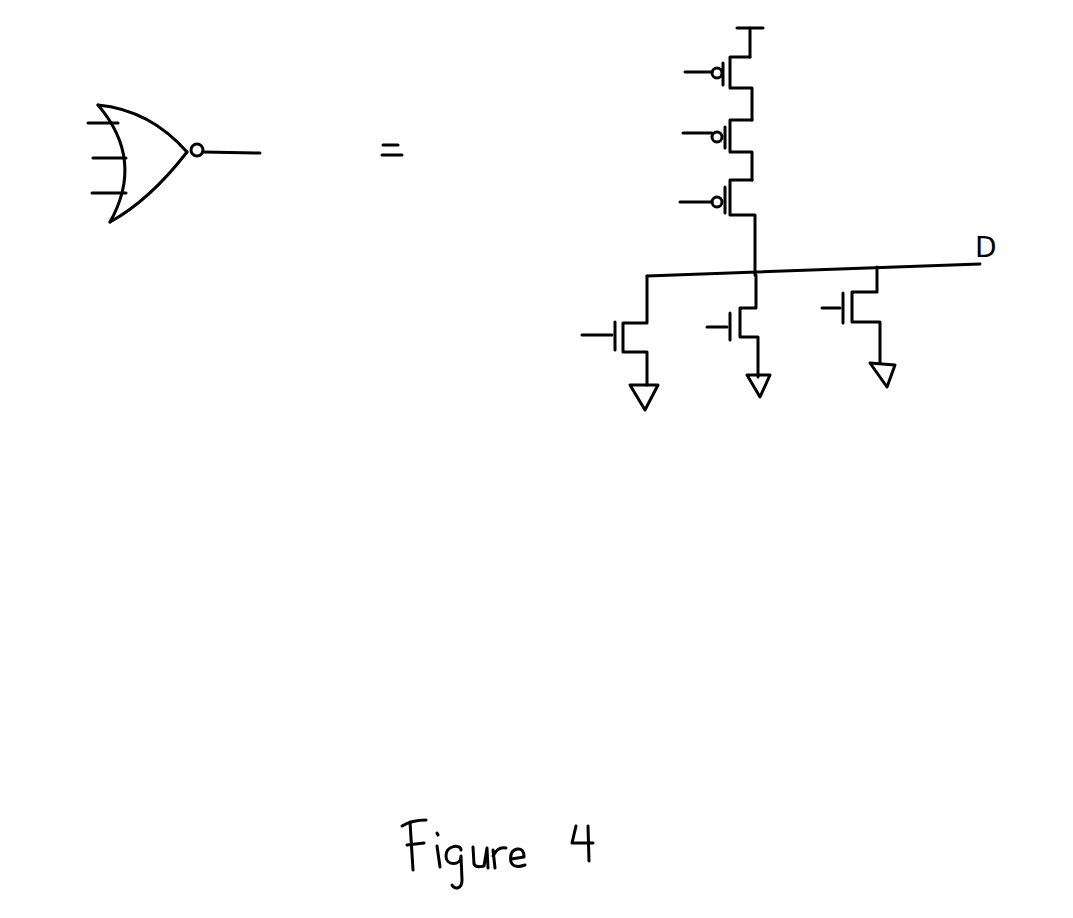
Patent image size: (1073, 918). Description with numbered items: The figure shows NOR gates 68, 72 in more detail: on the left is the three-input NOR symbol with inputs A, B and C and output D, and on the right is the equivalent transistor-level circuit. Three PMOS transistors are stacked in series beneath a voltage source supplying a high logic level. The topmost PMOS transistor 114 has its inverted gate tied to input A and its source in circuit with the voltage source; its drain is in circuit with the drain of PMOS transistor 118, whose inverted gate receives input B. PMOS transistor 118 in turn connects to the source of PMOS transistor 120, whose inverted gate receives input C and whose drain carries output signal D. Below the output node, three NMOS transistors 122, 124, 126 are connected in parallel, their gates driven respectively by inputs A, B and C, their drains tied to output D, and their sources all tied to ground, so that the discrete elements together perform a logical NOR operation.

The NOR gate 68 is at (156, 215).
The NOR gate 72 is at (128, 223).
The PMOS transistor (input A) 114 is at (778, 72).
The PMOS transistor 118 is at (783, 135).
The PMOS transistor 120 is at (793, 202).
The NMOS transistor 122 is at (630, 315).
The NMOS transistor 124 is at (738, 308).
The NMOS transistor 126 is at (950, 310).